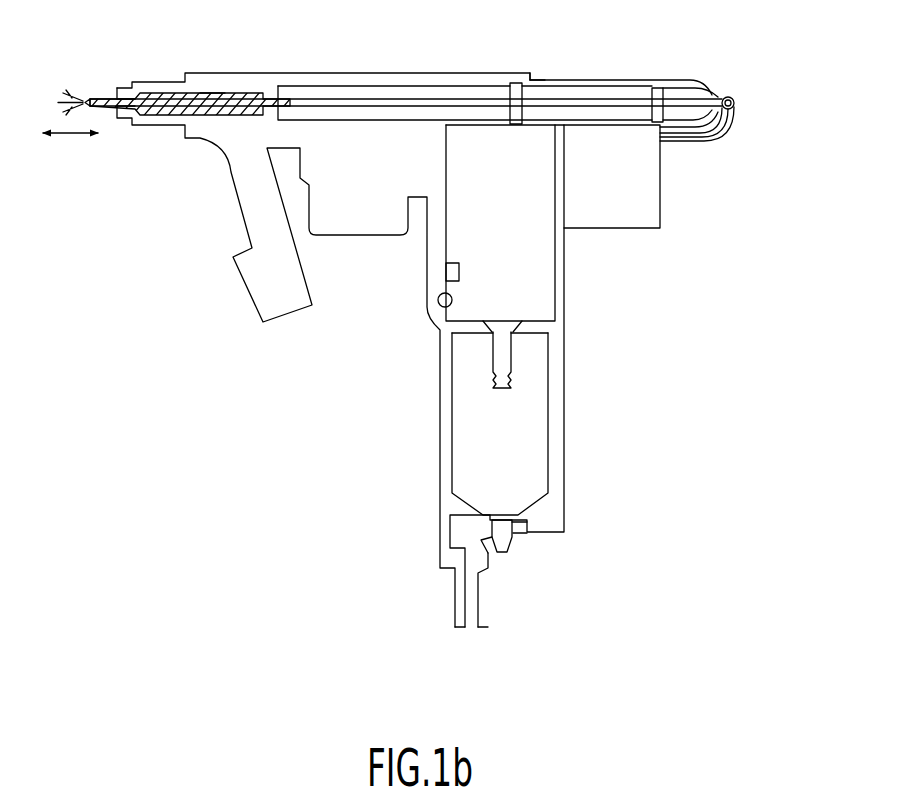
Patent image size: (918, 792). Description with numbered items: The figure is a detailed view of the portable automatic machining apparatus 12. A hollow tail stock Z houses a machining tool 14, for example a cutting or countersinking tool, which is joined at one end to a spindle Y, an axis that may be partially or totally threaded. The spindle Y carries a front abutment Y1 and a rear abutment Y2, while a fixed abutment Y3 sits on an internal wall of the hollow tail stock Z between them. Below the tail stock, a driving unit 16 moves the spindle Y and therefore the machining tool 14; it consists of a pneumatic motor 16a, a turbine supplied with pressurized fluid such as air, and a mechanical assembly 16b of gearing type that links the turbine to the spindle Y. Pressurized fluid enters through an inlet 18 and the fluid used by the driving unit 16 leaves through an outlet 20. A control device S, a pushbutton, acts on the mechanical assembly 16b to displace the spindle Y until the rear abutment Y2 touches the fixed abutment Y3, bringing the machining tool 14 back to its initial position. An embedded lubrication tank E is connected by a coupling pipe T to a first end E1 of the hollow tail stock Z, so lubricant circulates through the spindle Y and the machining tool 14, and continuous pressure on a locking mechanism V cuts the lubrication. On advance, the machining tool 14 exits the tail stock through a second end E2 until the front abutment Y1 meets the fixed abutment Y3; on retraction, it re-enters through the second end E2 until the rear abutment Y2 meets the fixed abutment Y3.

The portable automatic machining apparatus 12 is at (289, 364).
The machining tool 14 is at (239, 93).
The driving unit 16 is at (566, 334).
The pneumatic motor 16a is at (523, 428).
The mechanical assembly 16b is at (524, 230).
The inlet 18 is at (474, 615).
The outlet 20 is at (510, 543).
The lubrication tank E is at (615, 185).
The first end of the hollow tail stock E1 is at (729, 95).
The second end of the hollow tail stock E2 is at (119, 101).
The control device S is at (444, 272).
The coupling pipe T is at (733, 127).
The locking mechanism V is at (437, 304).
The spindle Y is at (592, 101).
The front abutment Y1 is at (659, 86).
The rear abutment Y2 is at (506, 98).
The fixed abutment Y3 is at (538, 78).
The hollow tail stock Z is at (212, 90).